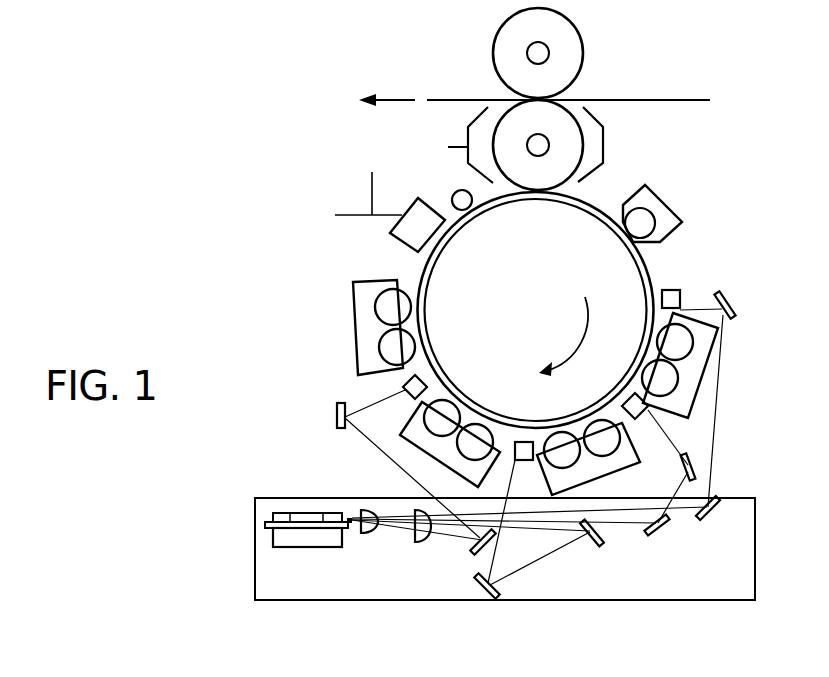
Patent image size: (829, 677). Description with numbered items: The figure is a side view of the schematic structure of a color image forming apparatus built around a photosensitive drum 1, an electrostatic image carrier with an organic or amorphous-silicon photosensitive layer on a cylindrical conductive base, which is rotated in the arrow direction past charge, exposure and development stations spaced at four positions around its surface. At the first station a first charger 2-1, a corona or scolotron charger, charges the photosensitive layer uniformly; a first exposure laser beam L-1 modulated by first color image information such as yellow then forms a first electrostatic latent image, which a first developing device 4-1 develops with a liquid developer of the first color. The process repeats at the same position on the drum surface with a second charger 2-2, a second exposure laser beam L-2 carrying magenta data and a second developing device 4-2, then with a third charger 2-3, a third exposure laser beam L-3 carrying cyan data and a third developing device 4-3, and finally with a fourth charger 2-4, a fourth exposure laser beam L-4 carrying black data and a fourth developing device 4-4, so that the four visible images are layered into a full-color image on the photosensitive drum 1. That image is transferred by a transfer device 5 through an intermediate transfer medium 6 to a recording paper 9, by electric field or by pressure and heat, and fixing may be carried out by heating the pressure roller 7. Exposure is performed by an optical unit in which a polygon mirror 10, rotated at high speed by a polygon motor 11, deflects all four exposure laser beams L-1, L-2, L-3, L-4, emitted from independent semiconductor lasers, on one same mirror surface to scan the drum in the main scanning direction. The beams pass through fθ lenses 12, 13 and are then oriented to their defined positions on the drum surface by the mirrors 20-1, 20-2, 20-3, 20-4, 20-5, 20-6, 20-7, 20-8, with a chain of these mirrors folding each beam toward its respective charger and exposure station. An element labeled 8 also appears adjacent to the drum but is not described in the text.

The photosensitive drum 1 is at (638, 265).
The transfer device 5 is at (623, 138).
The intermediate transfer medium 6 is at (558, 177).
The pressure roller 7 is at (573, 42).
The cleaning unit 8 is at (663, 192).
The recording paper 9 is at (617, 100).
The polygon mirror 10 is at (273, 517).
The polygon motor 11 is at (308, 547).
The fθ lens 12 is at (368, 533).
The fθ lens 13 is at (413, 542).
The first charger 2-1 is at (680, 285).
The second charger 2-2 is at (648, 410).
The third charger 2-3 is at (522, 442).
The fourth charger 2-4 is at (403, 396).
The first developing device 4-1 is at (695, 370).
The second developing device 4-2 is at (598, 468).
The third developing device 4-3 is at (427, 447).
The fourth developing device 4-4 is at (363, 327).
The mirror 20-1 is at (732, 300).
The mirror 20-2 is at (712, 517).
The mirror 20-3 is at (658, 533).
The mirror 20-4 is at (695, 458).
The mirror 20-5 is at (607, 535).
The mirror 20-6 is at (478, 595).
The mirror 20-7 is at (473, 550).
The mirror 20-8 is at (337, 417).
The first exposure laser beam L-1 is at (723, 338).
The second exposure laser beam L-2 is at (697, 485).
The third exposure laser beam L-3 is at (495, 545).
The fourth exposure laser beam L-4 is at (360, 435).